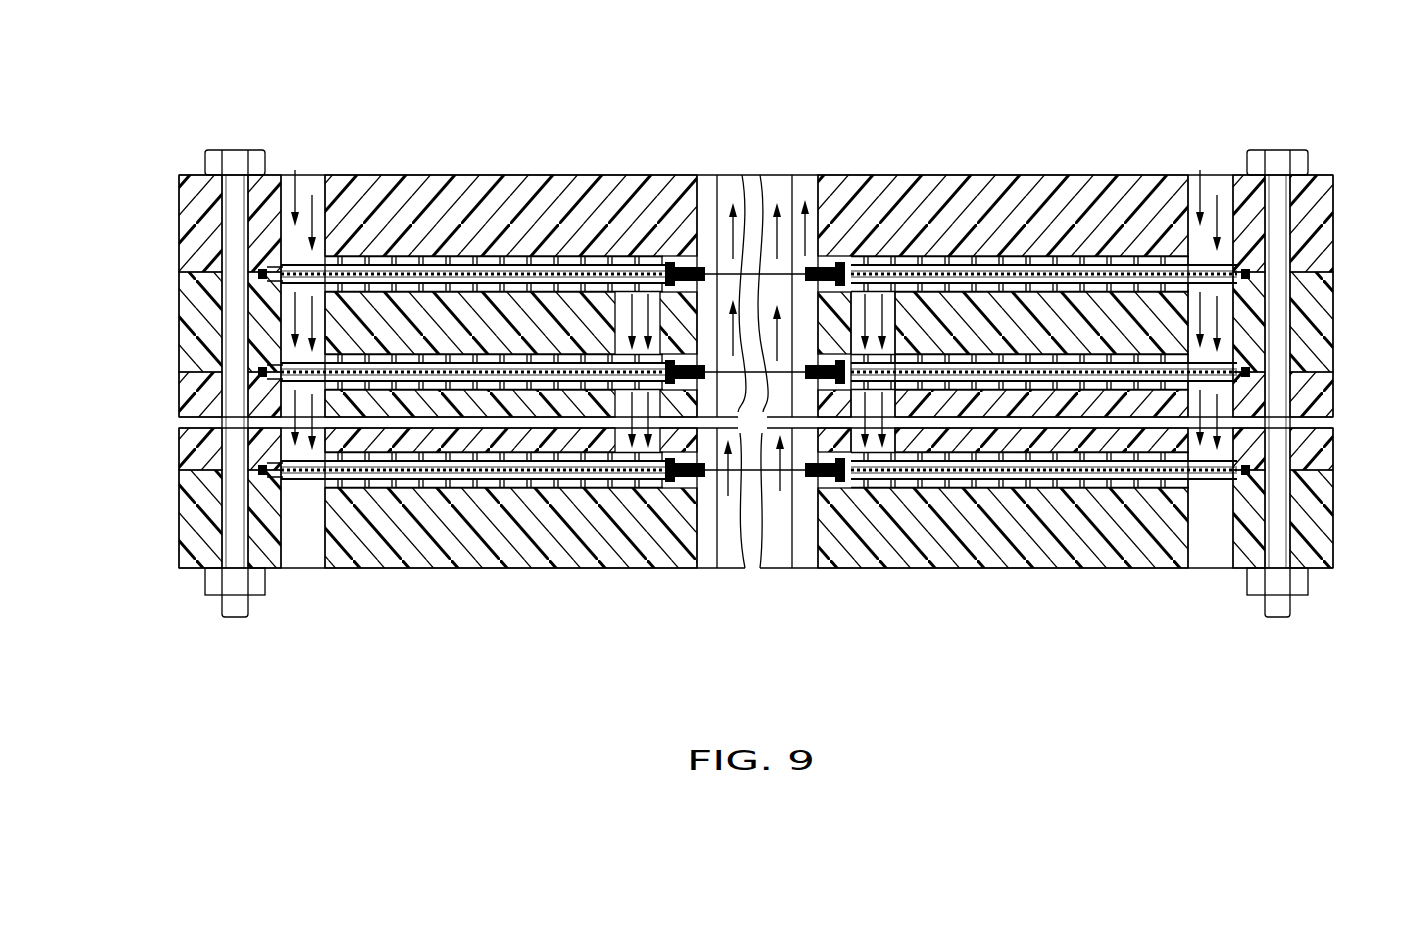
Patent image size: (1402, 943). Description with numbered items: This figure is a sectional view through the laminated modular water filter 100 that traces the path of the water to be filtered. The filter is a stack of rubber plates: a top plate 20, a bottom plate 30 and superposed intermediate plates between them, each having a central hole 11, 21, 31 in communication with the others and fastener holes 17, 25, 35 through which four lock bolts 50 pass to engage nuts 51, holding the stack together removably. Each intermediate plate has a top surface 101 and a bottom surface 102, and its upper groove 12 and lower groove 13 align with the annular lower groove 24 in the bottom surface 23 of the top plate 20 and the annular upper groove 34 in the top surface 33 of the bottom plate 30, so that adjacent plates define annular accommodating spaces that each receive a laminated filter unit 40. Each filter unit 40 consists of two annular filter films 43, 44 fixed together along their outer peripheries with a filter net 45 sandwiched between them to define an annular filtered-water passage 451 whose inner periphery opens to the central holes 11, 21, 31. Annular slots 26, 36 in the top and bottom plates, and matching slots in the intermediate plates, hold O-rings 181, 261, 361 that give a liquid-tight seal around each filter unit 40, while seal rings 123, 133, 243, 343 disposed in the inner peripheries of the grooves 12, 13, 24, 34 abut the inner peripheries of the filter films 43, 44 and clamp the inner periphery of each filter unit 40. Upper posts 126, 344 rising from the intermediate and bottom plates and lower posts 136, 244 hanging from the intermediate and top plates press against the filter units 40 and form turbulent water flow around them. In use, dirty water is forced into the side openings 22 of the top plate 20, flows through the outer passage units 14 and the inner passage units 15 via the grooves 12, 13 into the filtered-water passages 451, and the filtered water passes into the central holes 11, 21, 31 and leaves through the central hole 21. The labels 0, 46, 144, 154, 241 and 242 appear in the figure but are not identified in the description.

The laminated modular water filter 100 is at (1303, 136).
The gap 0 is at (176, 328).
The central hole 11 is at (750, 300).
The upper groove 12 is at (985, 262).
The lower groove 13 is at (1110, 355).
The outer passage unit 14 is at (1175, 294).
The rod end 144 is at (1050, 274).
The inner passage unit 15 is at (600, 310).
The plate portion 154 is at (470, 323).
The fastener hole 17 is at (222, 343).
The top plate 20 is at (166, 226).
The central hole 21 is at (738, 205).
The side opening 22 is at (1240, 218).
The bottom surface 23 is at (1275, 292).
The top surface 101 is at (1277, 371).
The annular lower groove 24 is at (383, 254).
The lower post 244 is at (412, 254).
The fastener hole 25 is at (222, 226).
The annular slot 26 is at (283, 256).
The bottom plate 30 is at (176, 544).
The central hole 31 is at (775, 560).
The top surface 33 is at (222, 452).
The annular upper groove 34 is at (428, 488).
The fastener hole 35 is at (222, 520).
The annular slot 36 is at (265, 482).
The laminated filter unit 40 is at (1223, 388).
The annular filter film 43 is at (1003, 368).
The annular filter film 44 is at (1030, 360).
The filter net 45 is at (1108, 365).
The filtered-water passage 451 is at (1020, 470).
The air passage 46 is at (728, 405).
The lock bolt 50 is at (232, 150).
The nut 51 is at (205, 592).
The bottom surface 102 is at (1250, 375).
The seal ring 123 is at (898, 262).
The upper post 126 is at (1020, 294).
The seal ring 133 is at (872, 490).
The lower post 136 is at (1150, 360).
The O-ring 181 is at (258, 373).
The rod end cap 241 is at (692, 266).
The rod flange 242 is at (667, 266).
The upper seal ring 243 is at (680, 283).
The O-ring 261 is at (258, 274).
The lower seal ring 343 is at (690, 488).
The upper post 344 is at (415, 488).
The O-ring 361 is at (258, 471).